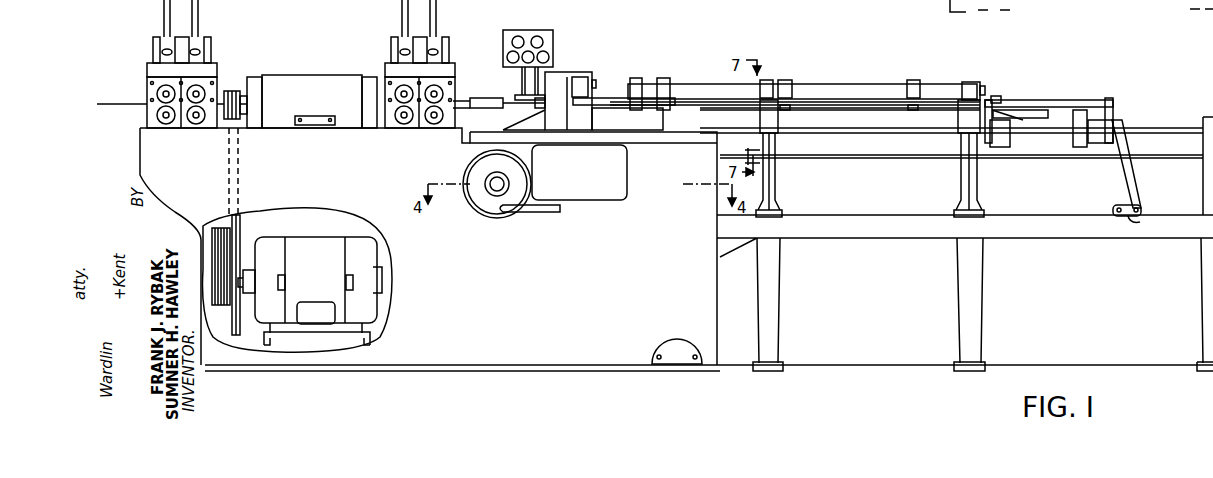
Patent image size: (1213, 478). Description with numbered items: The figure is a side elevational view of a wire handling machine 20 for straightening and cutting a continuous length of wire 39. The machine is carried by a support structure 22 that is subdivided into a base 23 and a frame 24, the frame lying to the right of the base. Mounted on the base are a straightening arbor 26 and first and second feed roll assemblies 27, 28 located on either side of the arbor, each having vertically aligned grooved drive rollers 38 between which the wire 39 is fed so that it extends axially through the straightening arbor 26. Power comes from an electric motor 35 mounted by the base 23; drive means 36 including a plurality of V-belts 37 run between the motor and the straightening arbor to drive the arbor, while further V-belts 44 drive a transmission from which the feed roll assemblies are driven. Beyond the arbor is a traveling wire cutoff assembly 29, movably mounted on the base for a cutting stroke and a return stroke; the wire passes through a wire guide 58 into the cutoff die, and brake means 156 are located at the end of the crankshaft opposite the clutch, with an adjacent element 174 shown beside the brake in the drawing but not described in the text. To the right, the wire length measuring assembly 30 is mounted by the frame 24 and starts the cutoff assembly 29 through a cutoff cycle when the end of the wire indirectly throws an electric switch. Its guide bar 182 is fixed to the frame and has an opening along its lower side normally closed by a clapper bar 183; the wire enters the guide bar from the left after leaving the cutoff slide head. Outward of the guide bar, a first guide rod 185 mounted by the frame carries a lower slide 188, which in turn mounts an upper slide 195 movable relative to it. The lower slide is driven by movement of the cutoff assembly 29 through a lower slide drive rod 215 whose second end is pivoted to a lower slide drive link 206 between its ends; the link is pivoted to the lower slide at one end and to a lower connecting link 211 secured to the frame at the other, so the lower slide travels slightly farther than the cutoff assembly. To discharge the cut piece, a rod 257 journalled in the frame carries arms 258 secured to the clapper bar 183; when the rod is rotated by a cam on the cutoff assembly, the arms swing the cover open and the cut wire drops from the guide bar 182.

The wire handling machine 20 is at (600, 33).
The support structure 22 is at (636, 358).
The base 23 is at (408, 354).
The frame 24 is at (965, 264).
The straightening arbor 26 is at (285, 82).
The first feed roll assembly 27 is at (147, 88).
The second feed roll assembly 28 is at (388, 82).
The traveling wire cutoff assembly 29 is at (560, 85).
The wire length measuring assembly 30 is at (1044, 111).
The electric motor 35 is at (370, 304).
The drive means 36 is at (241, 247).
The V-belts 37 is at (232, 236).
The grooved drive rollers 38 is at (193, 103).
The wire 39 is at (113, 106).
The V-belts 44 is at (206, 226).
The wire guide 58 is at (500, 98).
The brake means 156 is at (487, 201).
The belt 174 is at (548, 213).
The guide bar 182 is at (853, 100).
The clapper bar 183 is at (832, 111).
The first guide rod 185 is at (1033, 136).
The lower slide 188 is at (1100, 138).
The upper slide 195 is at (1010, 98).
The lower slide drive link 206 is at (1136, 177).
The lower connecting link 211 is at (1140, 220).
The lower slide drive rod 215 is at (840, 134).
The rod 257 is at (733, 84).
The arms 258 is at (786, 82).